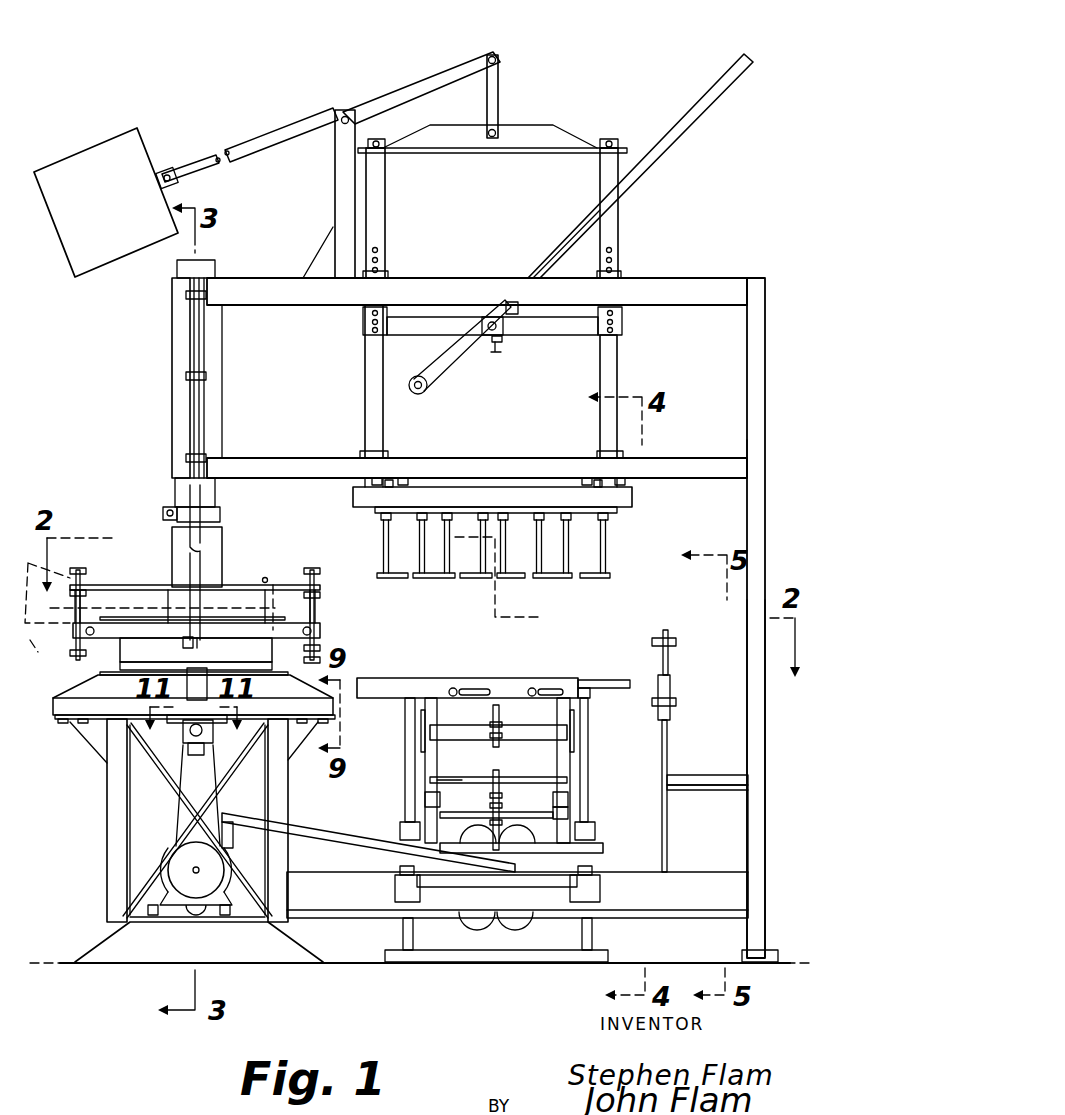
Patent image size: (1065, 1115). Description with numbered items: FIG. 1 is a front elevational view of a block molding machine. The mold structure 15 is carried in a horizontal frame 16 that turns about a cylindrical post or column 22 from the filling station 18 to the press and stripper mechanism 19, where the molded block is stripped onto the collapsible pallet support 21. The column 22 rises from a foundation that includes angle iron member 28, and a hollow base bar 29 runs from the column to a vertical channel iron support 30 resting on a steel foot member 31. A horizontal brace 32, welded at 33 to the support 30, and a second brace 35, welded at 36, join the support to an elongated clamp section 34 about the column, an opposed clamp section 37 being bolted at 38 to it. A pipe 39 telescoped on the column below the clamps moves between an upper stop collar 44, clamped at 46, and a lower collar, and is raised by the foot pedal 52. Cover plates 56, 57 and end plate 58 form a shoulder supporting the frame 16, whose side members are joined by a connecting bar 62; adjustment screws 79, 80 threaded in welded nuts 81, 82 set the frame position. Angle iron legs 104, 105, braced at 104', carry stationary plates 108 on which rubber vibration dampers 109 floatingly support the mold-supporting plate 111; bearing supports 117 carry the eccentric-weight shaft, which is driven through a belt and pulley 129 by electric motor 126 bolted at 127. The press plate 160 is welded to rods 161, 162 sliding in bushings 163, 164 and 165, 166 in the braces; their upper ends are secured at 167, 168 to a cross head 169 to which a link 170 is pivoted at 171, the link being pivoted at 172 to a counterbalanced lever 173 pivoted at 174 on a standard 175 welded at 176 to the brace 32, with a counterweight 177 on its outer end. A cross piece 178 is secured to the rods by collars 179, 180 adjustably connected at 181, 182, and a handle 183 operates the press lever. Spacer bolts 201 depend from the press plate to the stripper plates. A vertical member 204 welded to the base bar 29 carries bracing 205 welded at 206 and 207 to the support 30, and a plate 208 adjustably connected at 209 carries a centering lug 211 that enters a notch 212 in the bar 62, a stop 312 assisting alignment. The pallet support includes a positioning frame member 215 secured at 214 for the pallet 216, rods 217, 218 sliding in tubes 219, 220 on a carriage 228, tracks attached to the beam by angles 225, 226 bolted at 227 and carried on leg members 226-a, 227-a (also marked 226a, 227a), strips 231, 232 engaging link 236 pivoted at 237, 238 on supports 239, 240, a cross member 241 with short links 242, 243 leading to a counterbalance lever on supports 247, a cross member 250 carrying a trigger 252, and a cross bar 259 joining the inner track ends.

The mold structure 15 is at (196, 654).
The horizontal frame 16 is at (320, 631).
The filling station 18 is at (150, 616).
The press and stripper mechanism 19 is at (509, 436).
The collapsible pallet support 21 is at (535, 684).
The cylindrical post or column 22 is at (178, 268).
The angle iron member 28 is at (105, 940).
The hollow base bar 29 is at (731, 872).
The vertical channel iron support 30 is at (768, 747).
The steel foot member 31 is at (768, 957).
The horizontal brace 32 is at (718, 290).
The weld 33 is at (758, 285).
The elongated clamp section 34 is at (190, 332).
The second brace 35 is at (306, 465).
The weld 36 is at (750, 462).
The opposed clamp section 37 is at (186, 376).
The bolts 38 is at (186, 458).
The telescoping pipe 39 is at (215, 544).
The upper stop collar 44 is at (220, 514).
The clamp 46 is at (163, 513).
The foot-operated lever or pedal 52 is at (353, 852).
The upper cover plate 56 is at (160, 584).
The lower cover plate 57 is at (266, 582).
The end plate 58 is at (127, 571).
The connecting bar 62 is at (259, 627).
The adjustment screw 79 is at (314, 568).
The adjustment screw 80 is at (320, 660).
The welded nut 81 is at (320, 580).
The welded nut 82 is at (320, 648).
The angle iron leg 104 is at (91, 820).
The brace 104' is at (167, 820).
The angle iron leg 105 is at (288, 795).
The stationary plate 108 is at (92, 725).
The rubber vibration damper 109 is at (70, 700).
The mold-supporting plate 111 is at (266, 675).
The bearing support 117 is at (184, 732).
The electric motor 126 is at (143, 916).
The bolted connections 127 is at (225, 914).
The pulley 129 is at (167, 869).
The press plate 160 is at (632, 495).
The vertical rod 161 is at (367, 381).
The vertical rod 162 is at (618, 373).
The tubular bushing 163 is at (385, 457).
The tubular bushing 164 is at (601, 457).
The tubular support 165 is at (386, 275).
The tubular support 166 is at (618, 275).
The securing point 167 is at (385, 140).
The securing point 168 is at (614, 140).
The cross head 169 is at (556, 128).
The link 170 is at (499, 78).
The intermediate pivot 171 is at (497, 132).
The pivot 172 is at (496, 57).
The counterbalanced lever 173 is at (453, 66).
The pivot 174 is at (345, 113).
The standard 175 is at (335, 210).
The base of standard 176 is at (338, 277).
The counterweight 177 is at (137, 138).
The cross piece 178 is at (563, 337).
The collar 179 is at (368, 336).
The collar 180 is at (623, 330).
The adjustable connection 181 is at (371, 322).
The adjustable connection 182 is at (537, 273).
The handle 183 is at (687, 133).
The spacer bolts 201 is at (605, 549).
The vertical member 204 is at (668, 802).
The bracing 205 is at (732, 778).
The weld 206 is at (670, 775).
The weld 207 is at (748, 792).
The plate 208 is at (670, 675).
The adjustable connection 209 is at (676, 642).
The centering lug 211 is at (665, 630).
The notch 212 is at (200, 640).
The adjustable securing 214 is at (456, 688).
The pallet positioning frame member 215 is at (438, 682).
The pallet 216 is at (590, 680).
The pallet-supporting rod 217 is at (588, 766).
The pallet-supporting rod 218 is at (405, 791).
The supporting tube 219 is at (585, 832).
The supporting tube 220 is at (405, 838).
The attachment angle 225 is at (592, 896).
The attachment angle 226 is at (405, 903).
The leg member 226-a is at (476, 961).
The leg member 226a is at (410, 963).
The bolt 227 is at (601, 887).
The leg member 227-a is at (562, 961).
The leg member 227a is at (590, 963).
The carriage 228 is at (408, 896).
The strip 231 is at (425, 720).
The strip 232 is at (571, 718).
The link 236 is at (562, 759).
The pivot 237 is at (440, 801).
The pivot 238 is at (570, 791).
The vertical support 239 is at (440, 820).
The vertical support 240 is at (570, 812).
The cross member 241 is at (463, 777).
The short link 242 is at (500, 795).
The short link 243 is at (500, 803).
The vertical supports 247 is at (500, 821).
The cross member 250 is at (510, 728).
The trigger 252 is at (493, 715).
The cross bar 259 is at (557, 880).
The stop 312 is at (184, 640).